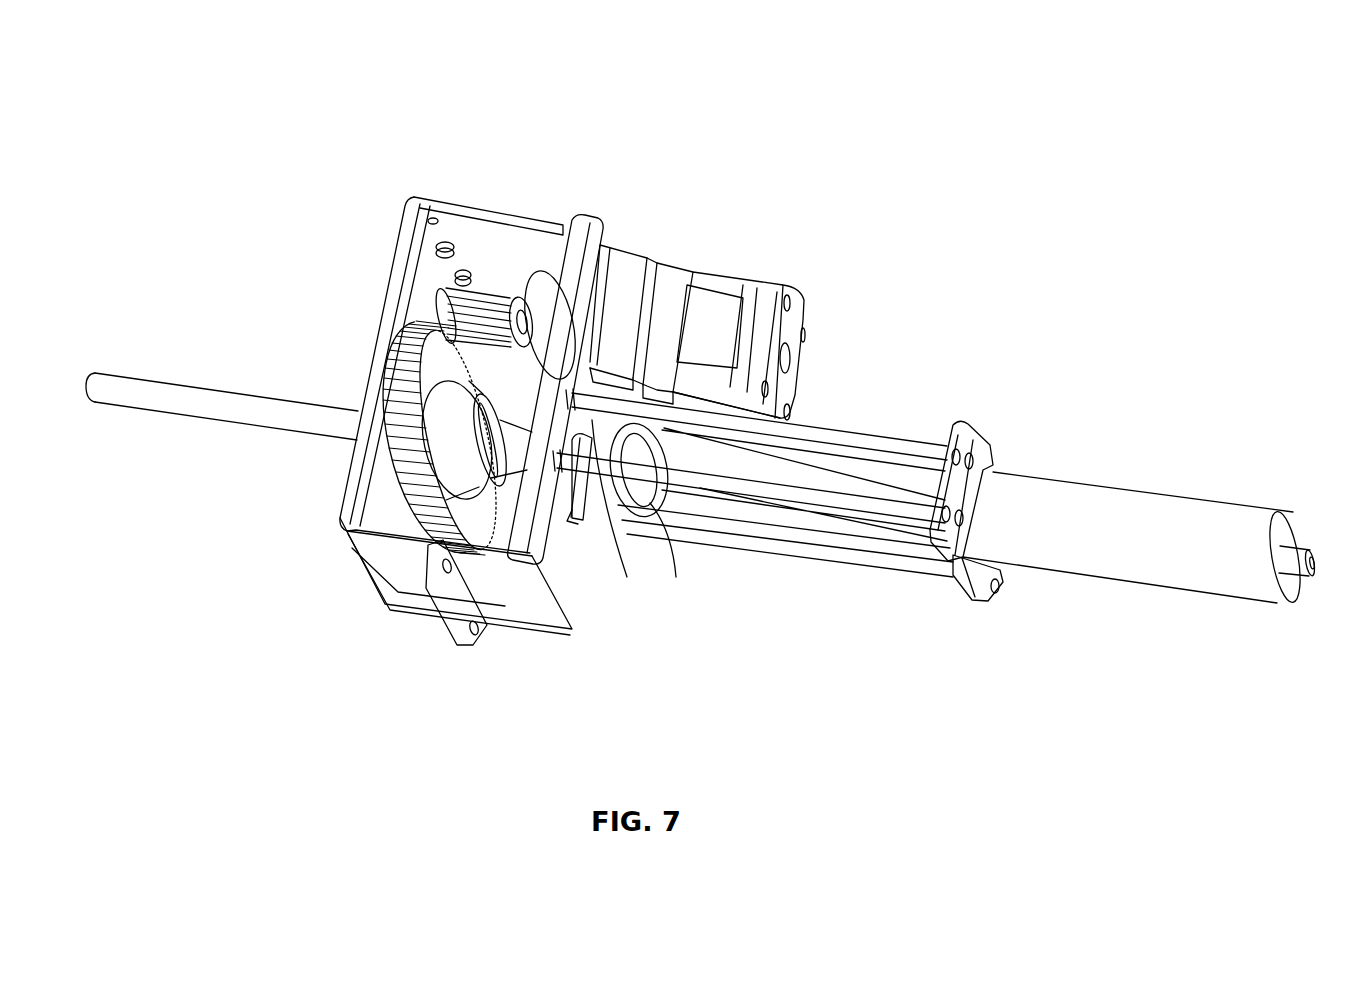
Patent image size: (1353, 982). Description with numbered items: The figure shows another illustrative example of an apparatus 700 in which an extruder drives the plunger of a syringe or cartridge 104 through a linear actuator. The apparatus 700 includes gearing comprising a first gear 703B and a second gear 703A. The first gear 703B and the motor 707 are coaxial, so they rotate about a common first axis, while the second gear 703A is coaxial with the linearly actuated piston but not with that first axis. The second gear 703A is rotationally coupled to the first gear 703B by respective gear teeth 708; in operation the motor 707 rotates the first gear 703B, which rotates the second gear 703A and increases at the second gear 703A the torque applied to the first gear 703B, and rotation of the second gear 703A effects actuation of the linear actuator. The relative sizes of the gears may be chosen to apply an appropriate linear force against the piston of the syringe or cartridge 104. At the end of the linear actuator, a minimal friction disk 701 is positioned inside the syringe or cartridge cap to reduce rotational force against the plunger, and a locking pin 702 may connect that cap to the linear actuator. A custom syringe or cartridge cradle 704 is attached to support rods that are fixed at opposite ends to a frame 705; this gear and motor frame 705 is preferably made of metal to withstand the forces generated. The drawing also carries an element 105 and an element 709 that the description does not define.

The apparatus 700 is at (288, 74).
The minimal friction disk 701 is at (663, 505).
The locking pin 702 is at (600, 528).
The second gear 703A is at (413, 350).
The first gear 703B is at (475, 282).
The syringe or cartridge cradle 704 is at (995, 585).
The frame 705 is at (589, 218).
The motor 707 is at (712, 273).
The gear teeth 708 is at (440, 297).
The output shaft 709 is at (147, 395).
The guide rod 105 is at (852, 470).
The syringe or cartridge 104 is at (1075, 525).